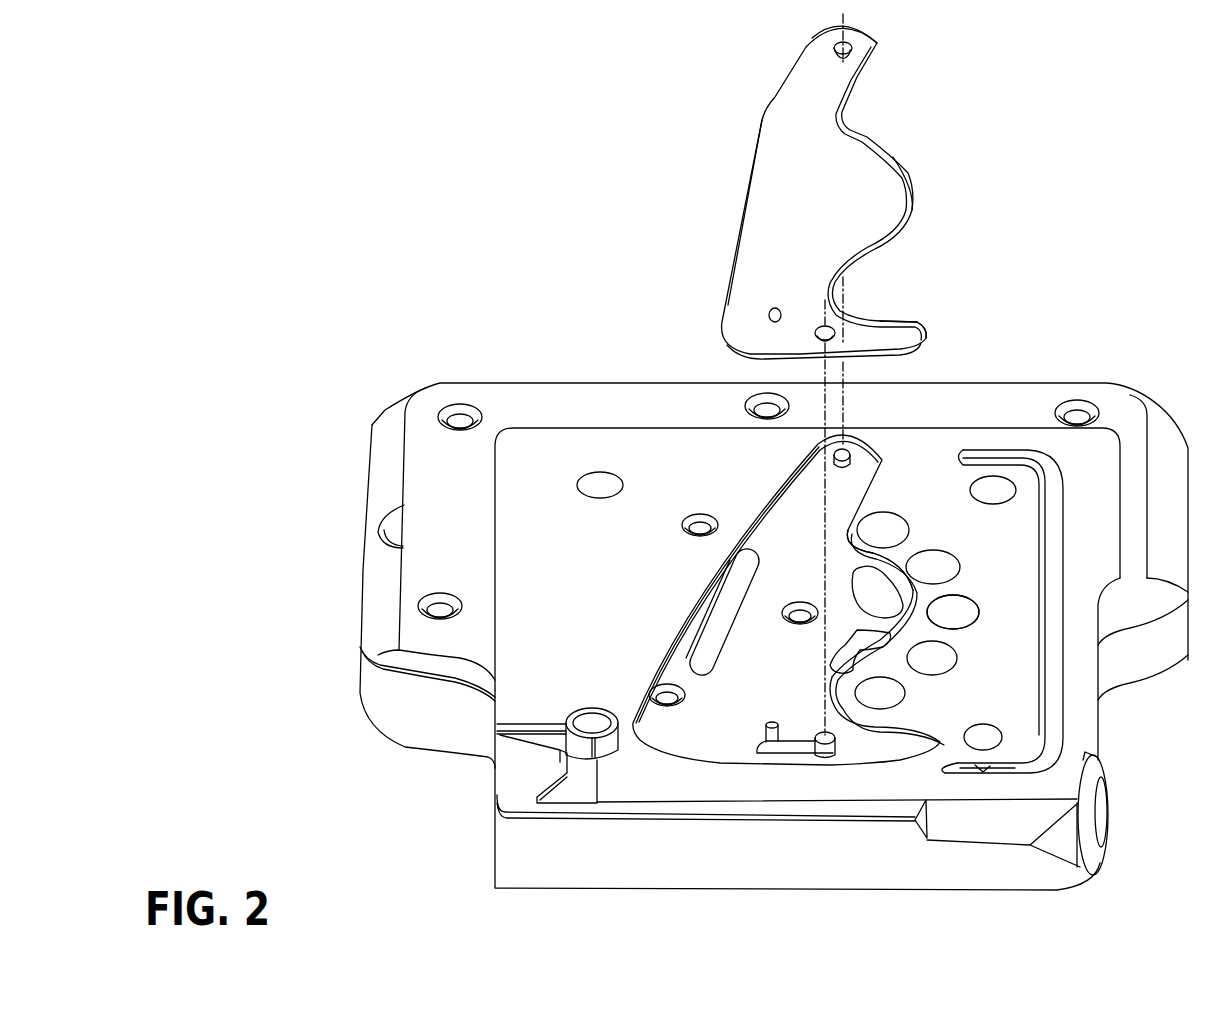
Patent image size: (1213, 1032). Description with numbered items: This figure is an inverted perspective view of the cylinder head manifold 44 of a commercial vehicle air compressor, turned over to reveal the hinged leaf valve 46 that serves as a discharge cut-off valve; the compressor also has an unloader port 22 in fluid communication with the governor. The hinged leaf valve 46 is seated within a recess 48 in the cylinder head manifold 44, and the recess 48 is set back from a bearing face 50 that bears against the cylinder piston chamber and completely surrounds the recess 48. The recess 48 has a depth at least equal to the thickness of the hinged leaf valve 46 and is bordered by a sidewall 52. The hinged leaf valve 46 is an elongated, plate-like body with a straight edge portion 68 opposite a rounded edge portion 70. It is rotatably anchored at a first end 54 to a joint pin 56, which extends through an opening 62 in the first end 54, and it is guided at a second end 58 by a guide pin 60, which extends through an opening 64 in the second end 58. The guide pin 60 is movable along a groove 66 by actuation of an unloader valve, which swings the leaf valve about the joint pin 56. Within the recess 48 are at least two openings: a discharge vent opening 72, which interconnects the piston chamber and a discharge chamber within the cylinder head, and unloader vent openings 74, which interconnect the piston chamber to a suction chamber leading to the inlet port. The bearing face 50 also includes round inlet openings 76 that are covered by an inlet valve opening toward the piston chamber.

The unloader port 22 is at (1103, 792).
The cylinder head manifold 44 is at (1052, 385).
The hinged leaf valve 46 is at (768, 250).
The recess 48 is at (725, 739).
The bearing face 50 is at (580, 618).
The sidewall 52 is at (737, 492).
The first end 54 is at (877, 43).
The joint pin 56 is at (848, 458).
The second end 58 is at (878, 322).
The guide pin 60 is at (828, 760).
The opening 62 is at (835, 45).
The opening 64 is at (833, 327).
The groove 66 is at (777, 740).
The straight edge portion 68 is at (762, 123).
The rounded edge portion 70 is at (914, 185).
The discharge vent opening 72 is at (757, 568).
The unloader vent openings 74 is at (893, 550).
The round inlet openings 76 is at (960, 573).